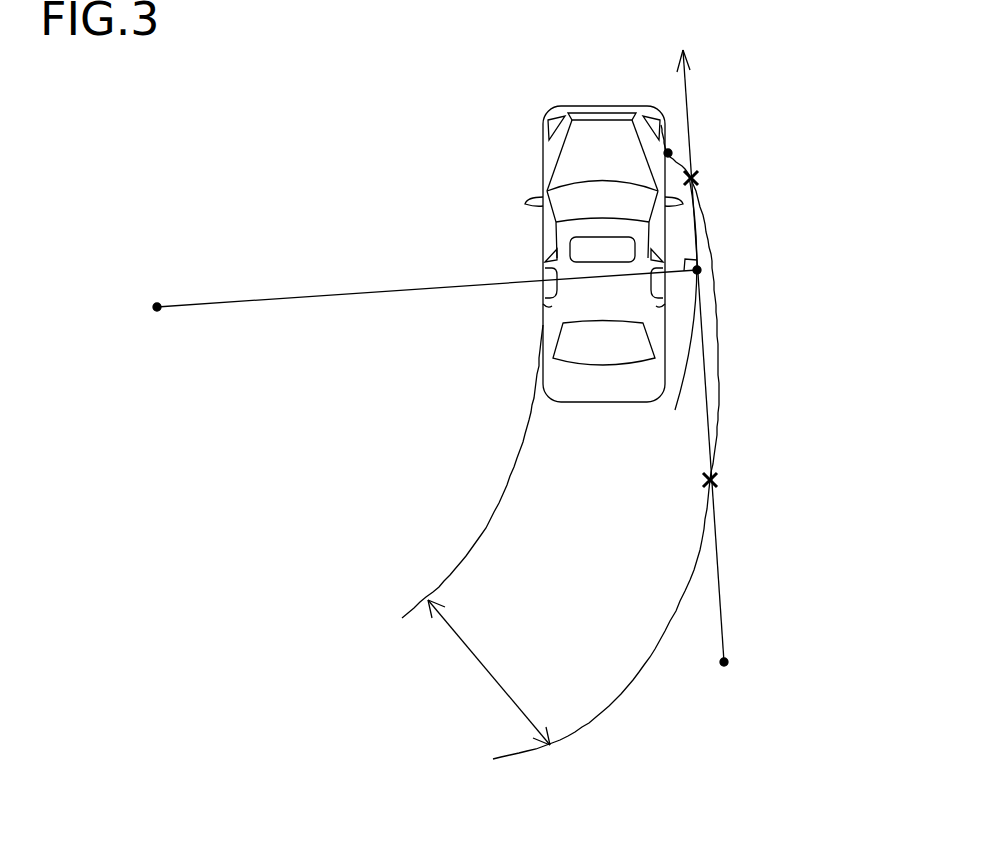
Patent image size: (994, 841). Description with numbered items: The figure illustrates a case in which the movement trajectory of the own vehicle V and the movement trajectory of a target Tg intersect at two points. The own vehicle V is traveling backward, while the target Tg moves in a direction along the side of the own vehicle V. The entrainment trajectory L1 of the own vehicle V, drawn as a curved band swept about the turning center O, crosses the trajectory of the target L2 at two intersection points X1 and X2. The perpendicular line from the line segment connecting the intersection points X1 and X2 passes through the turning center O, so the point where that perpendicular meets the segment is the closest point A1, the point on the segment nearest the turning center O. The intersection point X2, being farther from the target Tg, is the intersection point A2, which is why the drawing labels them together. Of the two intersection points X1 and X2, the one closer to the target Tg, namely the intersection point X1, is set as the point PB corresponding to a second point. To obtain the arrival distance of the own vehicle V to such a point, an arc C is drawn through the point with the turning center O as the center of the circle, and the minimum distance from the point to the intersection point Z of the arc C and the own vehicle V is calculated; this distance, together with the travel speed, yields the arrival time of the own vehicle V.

The own vehicle V is at (567, 107).
The turning center O is at (156, 298).
The entrainment trajectory L1 is at (487, 670).
The trajectory of the target L2 is at (720, 598).
The arc C is at (684, 381).
The intersection point of the arc and the own vehicle Z is at (668, 153).
The intersection point X2 is at (754, 181).
The intersection point on the far side from the target A2 is at (691, 178).
The closest point A1 is at (702, 269).
The intersection point X1 is at (772, 481).
The point corresponding to a second point PB is at (710, 480).
The target Tg is at (724, 667).